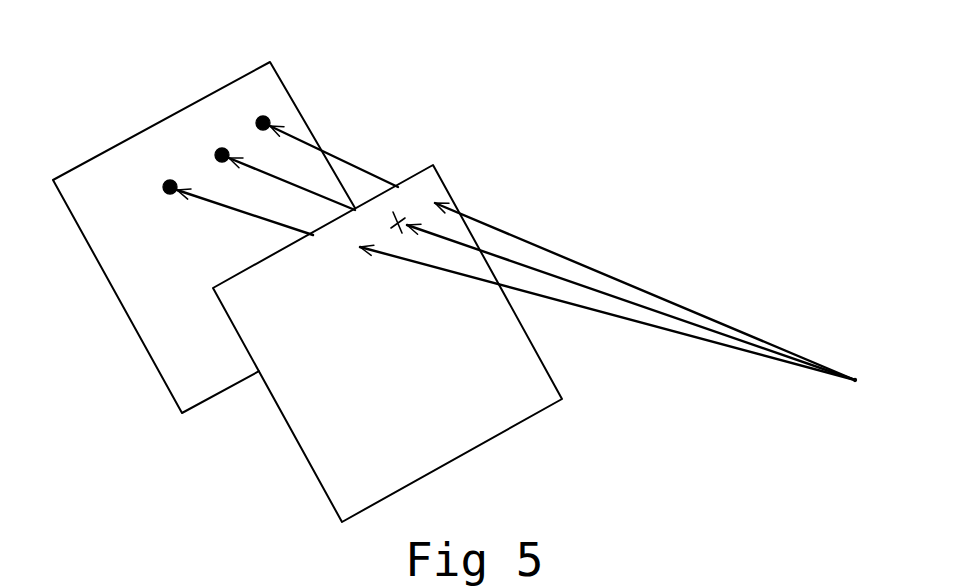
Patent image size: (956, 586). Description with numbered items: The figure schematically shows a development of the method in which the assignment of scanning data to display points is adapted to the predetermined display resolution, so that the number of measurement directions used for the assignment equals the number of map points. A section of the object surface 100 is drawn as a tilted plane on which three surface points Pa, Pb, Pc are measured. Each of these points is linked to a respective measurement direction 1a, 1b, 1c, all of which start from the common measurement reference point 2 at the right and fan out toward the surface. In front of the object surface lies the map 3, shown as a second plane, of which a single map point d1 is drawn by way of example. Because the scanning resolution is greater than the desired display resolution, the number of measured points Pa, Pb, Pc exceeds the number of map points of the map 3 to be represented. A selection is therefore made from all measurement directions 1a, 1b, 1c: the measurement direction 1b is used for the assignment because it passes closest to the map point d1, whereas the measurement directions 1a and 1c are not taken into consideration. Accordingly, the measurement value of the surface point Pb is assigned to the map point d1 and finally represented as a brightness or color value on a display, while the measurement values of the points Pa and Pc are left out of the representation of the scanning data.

The object surface 100 is at (204, 237).
The map 3 is at (387, 343).
The measurement direction 1a is at (560, 228).
The measurement direction 1b is at (565, 272).
The measurement direction 1c is at (587, 307).
The measurement reference point 2 is at (850, 382).
The map point d1 is at (398, 222).
The surface point Pa is at (263, 123).
The surface point Pb is at (222, 155).
The surface point Pc is at (170, 187).